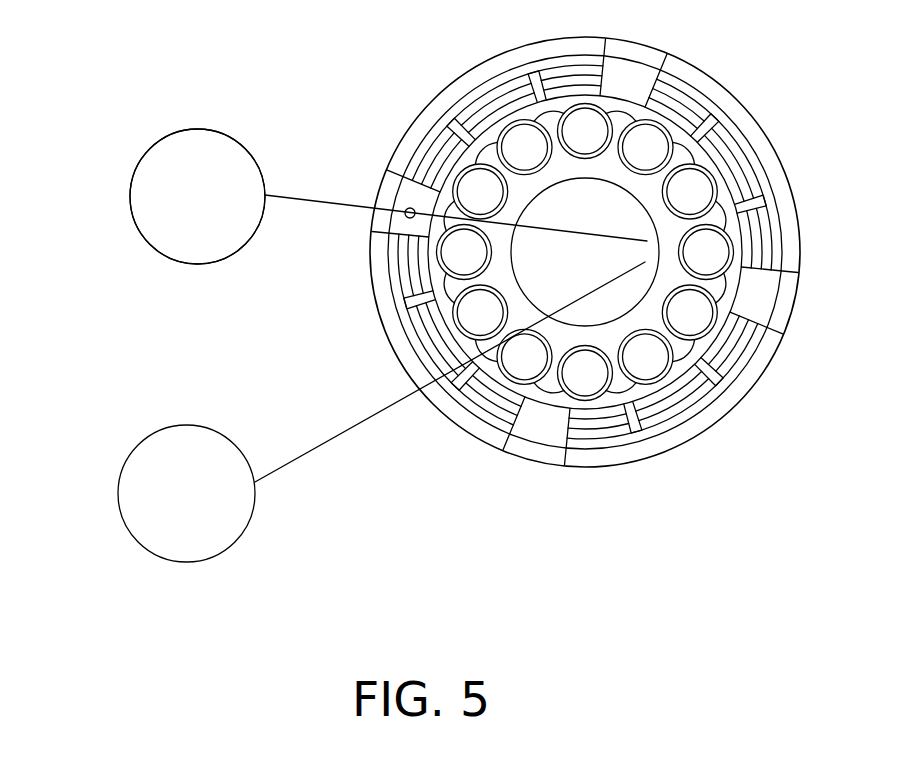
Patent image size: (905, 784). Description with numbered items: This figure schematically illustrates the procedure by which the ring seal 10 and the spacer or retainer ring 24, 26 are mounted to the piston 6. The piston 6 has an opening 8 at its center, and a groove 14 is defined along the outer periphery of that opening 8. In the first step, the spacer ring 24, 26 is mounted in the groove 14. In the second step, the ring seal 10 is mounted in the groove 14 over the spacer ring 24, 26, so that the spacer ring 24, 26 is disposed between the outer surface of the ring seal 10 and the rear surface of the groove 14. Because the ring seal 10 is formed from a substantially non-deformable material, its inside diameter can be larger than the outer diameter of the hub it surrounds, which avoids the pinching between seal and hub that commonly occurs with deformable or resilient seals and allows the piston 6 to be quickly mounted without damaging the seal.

The piston 6 is at (667, 442).
The opening 8 is at (597, 273).
The groove 14 is at (630, 197).
The spacer ring 24 is at (152, 144).
The retainer ring 26 is at (197, 196).
The ring seal 10 is at (137, 447).